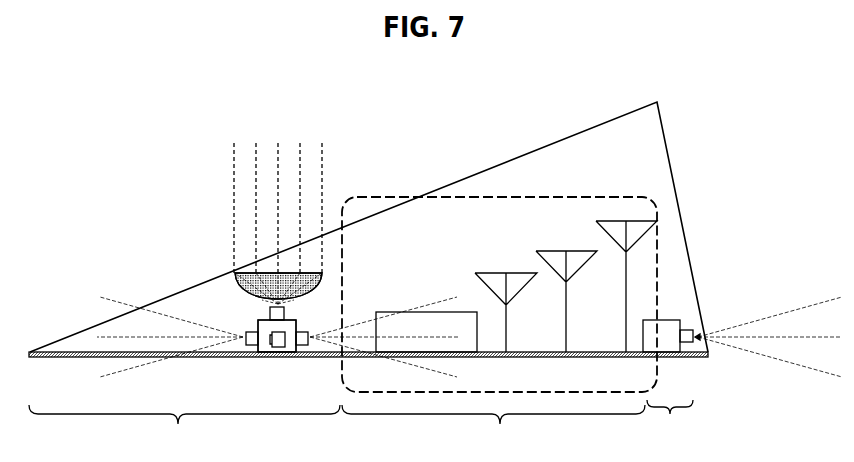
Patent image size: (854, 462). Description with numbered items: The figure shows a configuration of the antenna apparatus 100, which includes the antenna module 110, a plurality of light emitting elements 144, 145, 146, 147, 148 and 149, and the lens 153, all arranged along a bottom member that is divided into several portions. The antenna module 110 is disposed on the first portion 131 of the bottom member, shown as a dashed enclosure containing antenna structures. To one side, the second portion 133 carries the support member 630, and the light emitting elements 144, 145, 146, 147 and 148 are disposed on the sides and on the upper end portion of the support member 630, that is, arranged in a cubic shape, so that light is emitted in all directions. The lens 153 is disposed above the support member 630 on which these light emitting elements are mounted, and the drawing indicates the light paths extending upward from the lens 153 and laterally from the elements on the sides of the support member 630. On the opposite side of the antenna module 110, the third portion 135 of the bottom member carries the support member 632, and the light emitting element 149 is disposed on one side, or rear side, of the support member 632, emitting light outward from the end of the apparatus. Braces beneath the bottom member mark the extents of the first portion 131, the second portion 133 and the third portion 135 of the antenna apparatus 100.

The antenna apparatus 100 is at (465, 112).
The antenna module 110 is at (382, 196).
The first portion 131 is at (493, 428).
The second portion 133 is at (184, 428).
The third portion 135 is at (670, 421).
The light emitting element 144 is at (252, 346).
The light emitting element 145 is at (278, 340).
The light emitting element 146 is at (278, 347).
The light emitting element 147 is at (303, 346).
The light emitting element 148 is at (270, 310).
The light emitting element 149 is at (690, 330).
The lens 153 is at (248, 280).
The support member 630 is at (258, 321).
The support member 632 is at (667, 320).